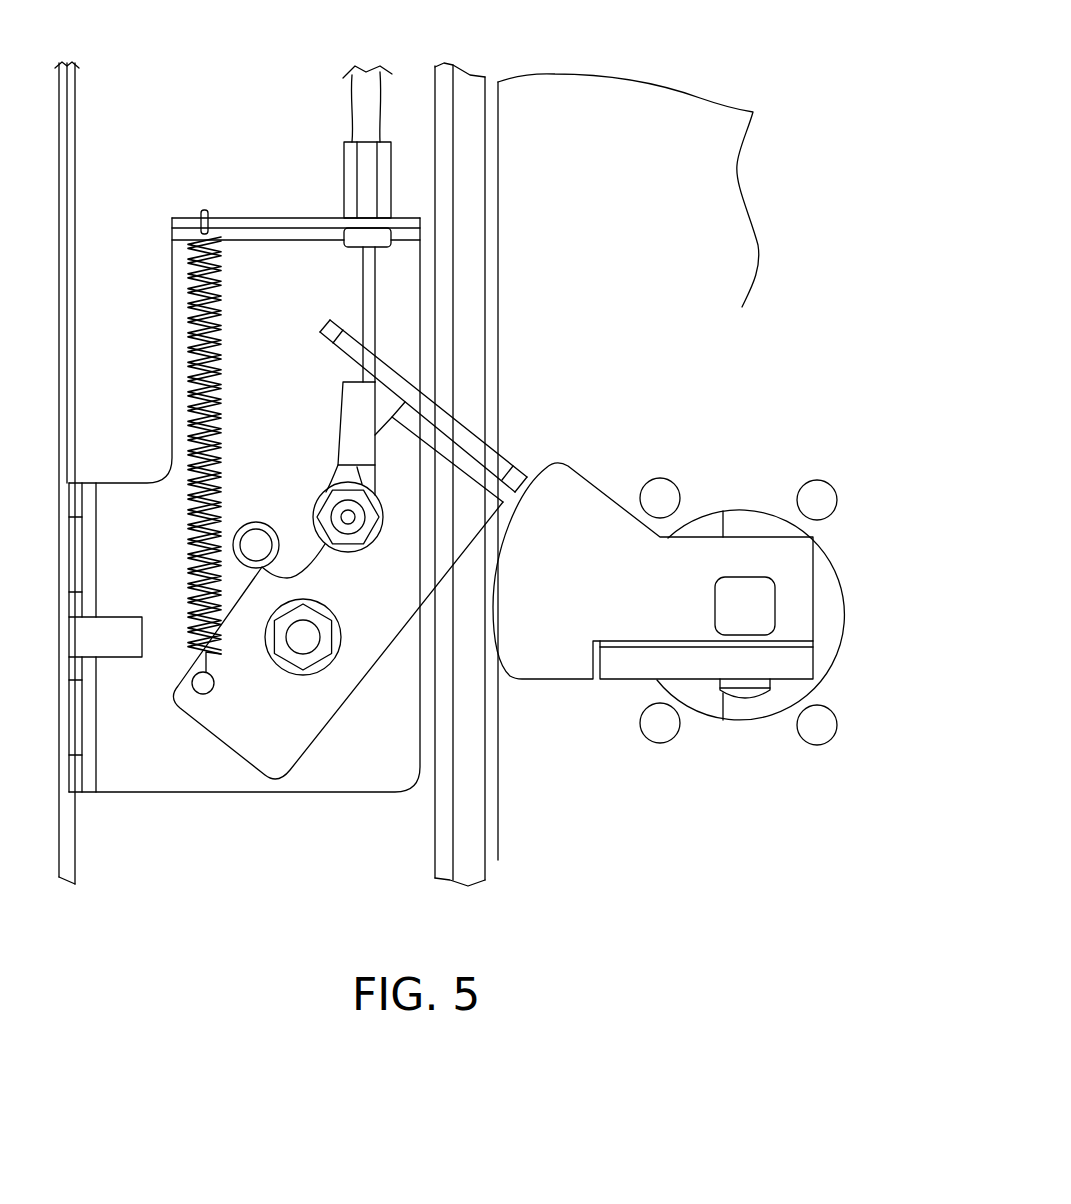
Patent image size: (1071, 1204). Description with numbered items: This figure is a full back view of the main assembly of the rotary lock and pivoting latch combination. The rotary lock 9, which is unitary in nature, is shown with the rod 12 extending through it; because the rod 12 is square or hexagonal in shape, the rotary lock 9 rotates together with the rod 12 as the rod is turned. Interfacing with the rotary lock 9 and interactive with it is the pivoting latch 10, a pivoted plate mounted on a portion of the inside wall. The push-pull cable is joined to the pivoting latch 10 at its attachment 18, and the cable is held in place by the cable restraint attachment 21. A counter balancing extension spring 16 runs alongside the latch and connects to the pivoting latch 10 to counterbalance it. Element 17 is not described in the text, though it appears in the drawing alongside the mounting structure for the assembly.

The rotary lock 9 is at (578, 540).
The pivoting latch 10 is at (449, 512).
The rod 12 is at (758, 615).
The counter balancing extension spring 16 is at (222, 281).
The mounting bracket 17 is at (164, 148).
The attachment 18 is at (349, 519).
The cable restraint attachment 21 is at (320, 173).